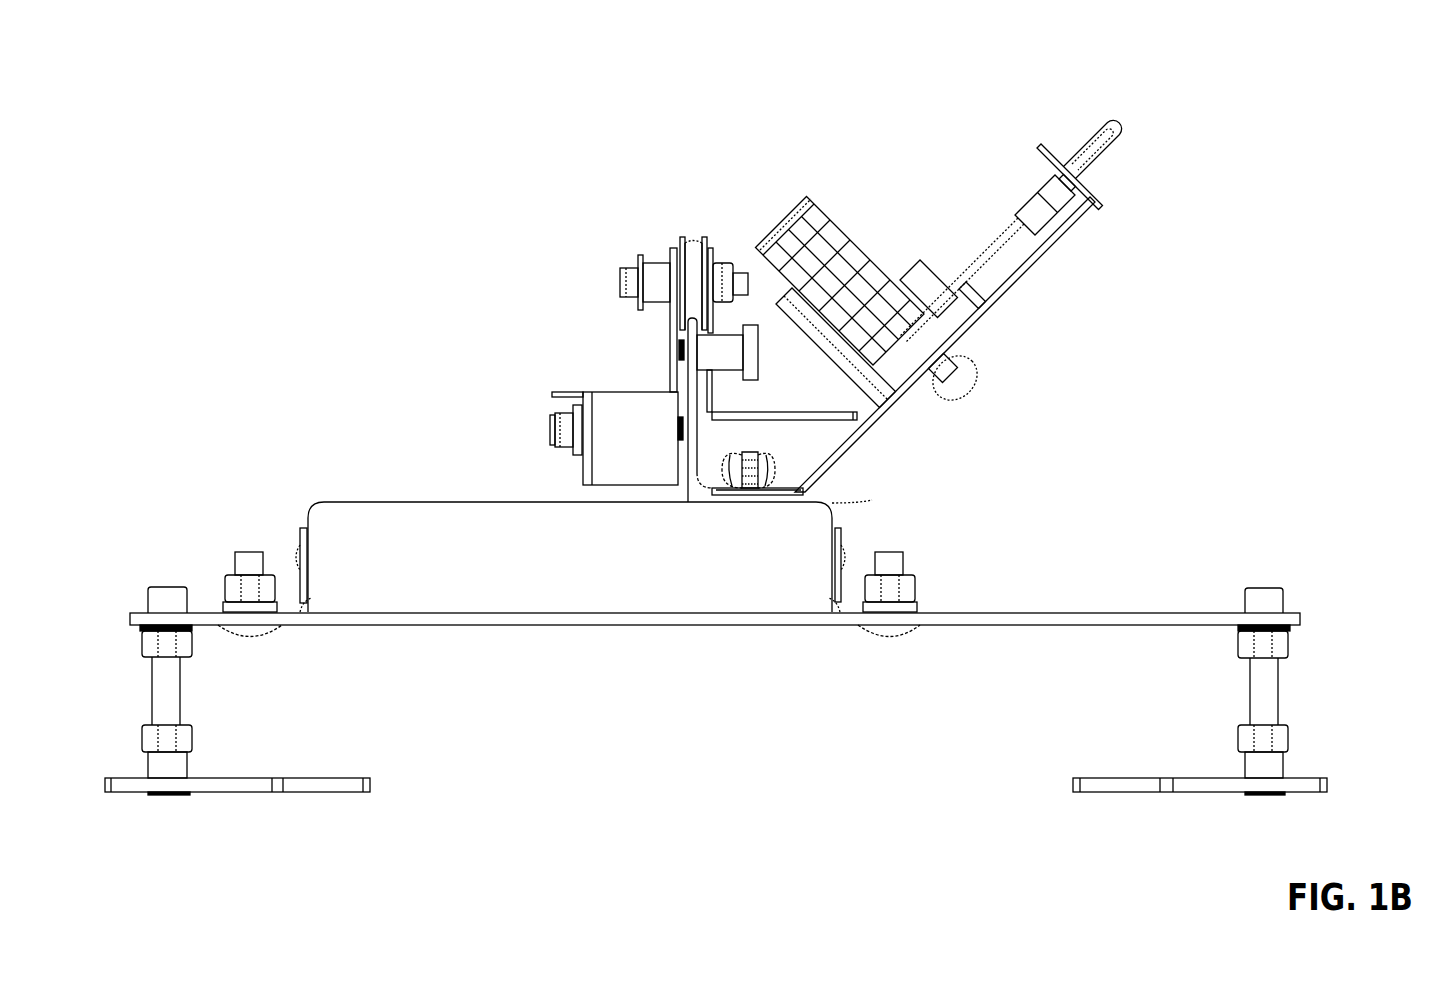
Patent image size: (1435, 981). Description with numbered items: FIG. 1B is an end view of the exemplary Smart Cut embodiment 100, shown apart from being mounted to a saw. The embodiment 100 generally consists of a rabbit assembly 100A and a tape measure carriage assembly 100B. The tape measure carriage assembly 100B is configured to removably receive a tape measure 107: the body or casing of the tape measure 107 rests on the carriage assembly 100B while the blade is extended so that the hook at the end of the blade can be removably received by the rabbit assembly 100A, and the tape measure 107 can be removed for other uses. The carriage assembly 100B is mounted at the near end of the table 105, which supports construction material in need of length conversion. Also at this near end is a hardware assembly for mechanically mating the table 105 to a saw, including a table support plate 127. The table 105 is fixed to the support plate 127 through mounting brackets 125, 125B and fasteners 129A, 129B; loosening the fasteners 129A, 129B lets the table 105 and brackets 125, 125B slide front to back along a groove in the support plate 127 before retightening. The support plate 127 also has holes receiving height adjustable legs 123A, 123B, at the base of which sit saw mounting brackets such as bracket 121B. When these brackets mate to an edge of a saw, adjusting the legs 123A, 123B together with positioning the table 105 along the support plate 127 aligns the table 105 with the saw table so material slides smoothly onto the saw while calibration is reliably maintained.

The Smart Cut embodiment 100 is at (117, 93).
The rabbit assembly 100A is at (641, 226).
The tape measure carriage assembly 100B is at (1124, 362).
The table 105 is at (462, 500).
The tape measure 107 is at (818, 198).
The saw mounting bracket 121B is at (315, 780).
The height adjustable leg 123A is at (180, 692).
The height adjustable leg 123B is at (1258, 692).
The mounting bracket 125 is at (298, 530).
The mounting bracket 125B is at (840, 530).
The table support plate 127 is at (1056, 624).
The fastener 129A is at (252, 557).
The fastener 129B is at (893, 558).